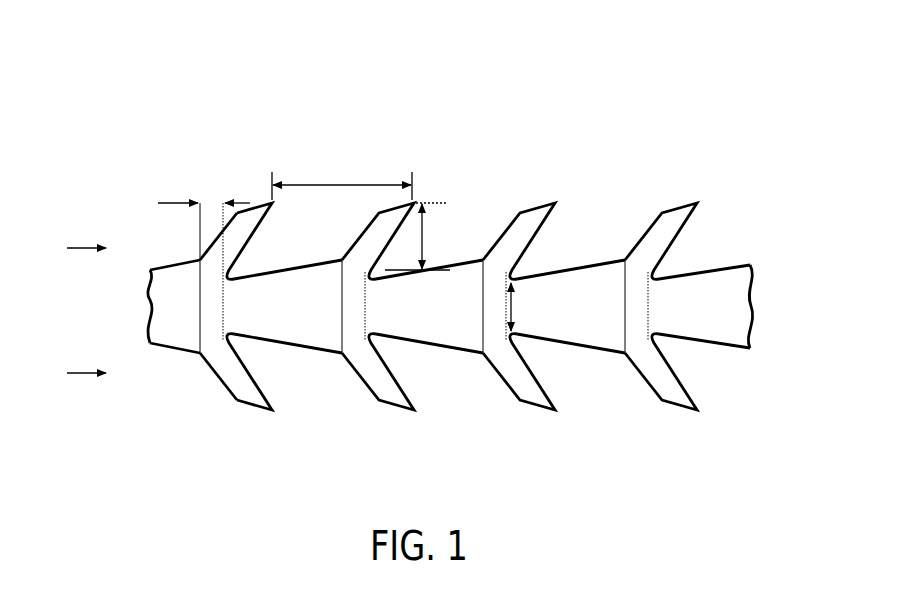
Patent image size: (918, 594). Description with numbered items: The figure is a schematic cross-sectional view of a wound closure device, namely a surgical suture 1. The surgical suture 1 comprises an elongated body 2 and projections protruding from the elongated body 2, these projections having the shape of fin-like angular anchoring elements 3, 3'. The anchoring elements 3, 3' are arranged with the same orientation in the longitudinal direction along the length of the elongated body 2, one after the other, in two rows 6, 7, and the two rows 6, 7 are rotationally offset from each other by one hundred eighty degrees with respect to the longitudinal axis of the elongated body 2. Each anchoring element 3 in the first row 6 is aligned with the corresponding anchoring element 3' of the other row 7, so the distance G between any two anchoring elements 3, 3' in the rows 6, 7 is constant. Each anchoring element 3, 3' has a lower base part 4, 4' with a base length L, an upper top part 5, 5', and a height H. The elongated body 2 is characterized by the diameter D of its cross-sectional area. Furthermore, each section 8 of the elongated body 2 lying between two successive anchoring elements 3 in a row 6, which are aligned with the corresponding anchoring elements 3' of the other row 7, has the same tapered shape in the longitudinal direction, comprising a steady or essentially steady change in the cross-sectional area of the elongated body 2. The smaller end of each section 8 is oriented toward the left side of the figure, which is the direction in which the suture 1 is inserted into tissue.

The surgical suture 1 is at (536, 122).
The elongated body 2 is at (731, 320).
The anchoring element 3 is at (198, 209).
The anchoring element 3' is at (212, 392).
The lower base part 4 is at (194, 236).
The lower base part 4' is at (195, 376).
The upper top part 5 is at (249, 209).
The upper top part 5' is at (244, 392).
The row 6 is at (77, 247).
The row 7 is at (77, 372).
The section 8 is at (291, 320).